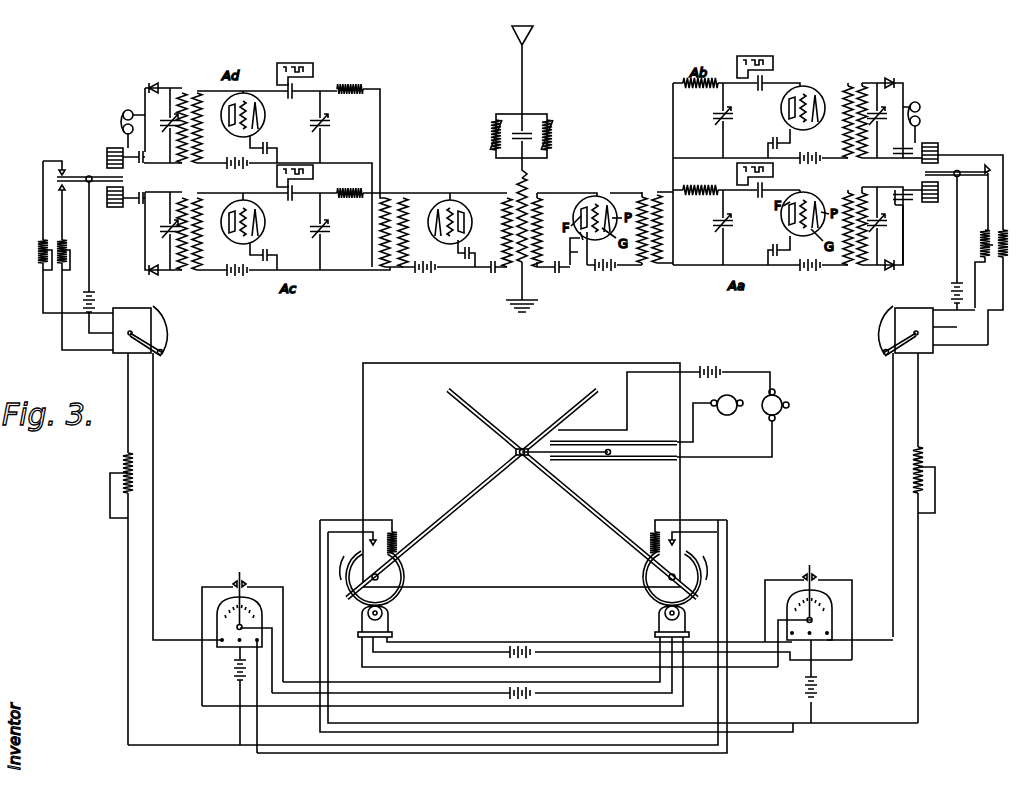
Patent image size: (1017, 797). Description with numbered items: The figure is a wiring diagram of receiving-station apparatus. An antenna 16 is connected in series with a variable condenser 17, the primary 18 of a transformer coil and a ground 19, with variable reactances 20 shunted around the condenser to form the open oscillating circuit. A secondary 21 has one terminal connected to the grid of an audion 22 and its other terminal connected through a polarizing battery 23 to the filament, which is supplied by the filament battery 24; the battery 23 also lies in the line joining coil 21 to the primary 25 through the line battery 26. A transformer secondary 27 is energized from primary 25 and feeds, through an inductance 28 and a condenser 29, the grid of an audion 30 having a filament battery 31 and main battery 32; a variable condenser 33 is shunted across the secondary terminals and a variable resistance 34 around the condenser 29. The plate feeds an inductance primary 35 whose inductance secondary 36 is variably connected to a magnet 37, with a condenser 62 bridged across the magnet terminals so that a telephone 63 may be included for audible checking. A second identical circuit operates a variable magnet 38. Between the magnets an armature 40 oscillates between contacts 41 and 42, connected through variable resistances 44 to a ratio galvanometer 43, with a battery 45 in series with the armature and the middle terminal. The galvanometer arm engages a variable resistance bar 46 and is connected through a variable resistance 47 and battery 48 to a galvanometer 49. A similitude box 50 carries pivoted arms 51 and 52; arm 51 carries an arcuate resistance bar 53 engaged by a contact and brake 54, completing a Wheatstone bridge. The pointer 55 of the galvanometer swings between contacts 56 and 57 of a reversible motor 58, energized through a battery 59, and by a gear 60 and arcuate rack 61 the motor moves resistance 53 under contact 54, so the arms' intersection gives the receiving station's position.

The antenna 16 is at (536, 33).
The variable condenser 17 is at (535, 132).
The primary of transformer coil 18 is at (527, 262).
The ground 19 is at (540, 305).
The variable reactances 20 is at (550, 140).
The secondary 21 is at (542, 226).
The audion 22 is at (592, 198).
The polarizing battery 23 is at (560, 270).
The filament battery 24 is at (582, 268).
The primary 25 is at (644, 198).
The line battery 26 is at (657, 270).
The transformer secondary 27 is at (676, 268).
The inductance 28 is at (715, 201).
The condenser 29 is at (759, 200).
The audion 30 is at (790, 225).
The filament battery 31 is at (782, 262).
The main battery 32 is at (812, 270).
The variable condenser 33 is at (735, 232).
The variable resistance 34 is at (773, 178).
The inductance primary 35 is at (846, 266).
The inductance secondary 36 is at (866, 266).
The magnet 37 is at (922, 206).
The variable magnet 38 is at (936, 153).
The armature 40 is at (959, 171).
The contact 41 is at (992, 166).
The contact 42 is at (983, 180).
The ratio galvanometer 43 is at (926, 352).
The variable resistances 44 is at (985, 236).
The battery 45 is at (953, 289).
The variable resistance bar 46 is at (890, 335).
The variable resistance 47 is at (922, 462).
The battery 48 is at (816, 695).
The galvanometer 49 is at (239, 609).
The similitude box 50 is at (675, 504).
The arm 51 is at (441, 523).
The arm 52 is at (598, 517).
The arcuate resistance bar 53 is at (340, 568).
The contact and brake 54 is at (378, 540).
The pointer 55 is at (833, 596).
The contact 56 is at (823, 582).
The contact 57 is at (806, 584).
The reversible motor 58 is at (393, 631).
The battery 59 is at (540, 648).
The gear 60 is at (384, 613).
The arcuate rack 61 is at (405, 582).
The condenser 62 is at (878, 226).
The telephone 63 is at (921, 110).